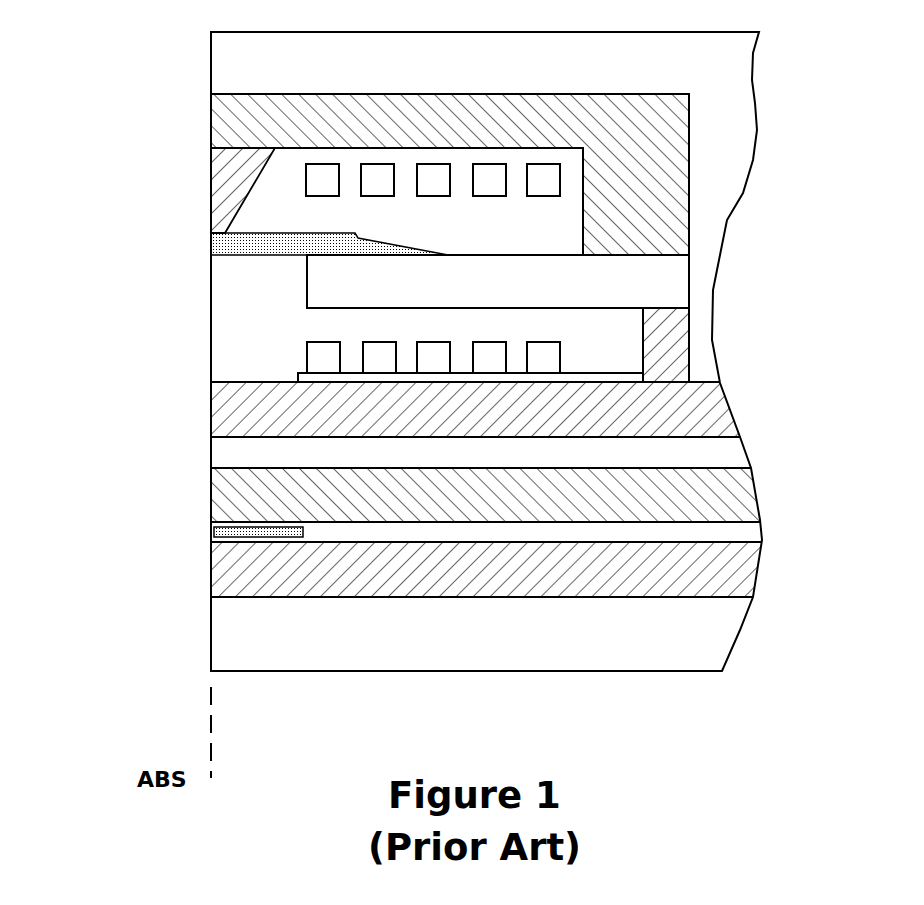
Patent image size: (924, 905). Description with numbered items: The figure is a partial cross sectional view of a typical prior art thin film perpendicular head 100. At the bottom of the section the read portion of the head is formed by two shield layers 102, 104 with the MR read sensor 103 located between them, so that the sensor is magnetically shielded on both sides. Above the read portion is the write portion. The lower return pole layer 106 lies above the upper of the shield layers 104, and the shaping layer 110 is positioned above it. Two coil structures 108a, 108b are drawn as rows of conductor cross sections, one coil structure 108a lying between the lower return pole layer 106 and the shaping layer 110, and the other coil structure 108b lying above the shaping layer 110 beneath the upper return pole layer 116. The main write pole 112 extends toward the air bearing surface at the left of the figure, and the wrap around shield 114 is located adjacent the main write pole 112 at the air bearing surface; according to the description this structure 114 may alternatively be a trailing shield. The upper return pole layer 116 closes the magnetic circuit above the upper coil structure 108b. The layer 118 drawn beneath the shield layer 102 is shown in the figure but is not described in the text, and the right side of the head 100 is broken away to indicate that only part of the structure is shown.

The thin film perpendicular head 100 is at (760, 233).
The shield layer 102 is at (402, 581).
The MR read sensor 103 is at (212, 532).
The shield layer 104 is at (402, 513).
The lower return pole layer 106 is at (388, 420).
The coil structure 108a is at (307, 343).
The coil structure 108b is at (433, 197).
The shaping layer 110 is at (548, 286).
The main write pole 112 is at (210, 245).
The wrap around shield 114 is at (218, 192).
The upper return pole layer 116 is at (462, 130).
The substrate 118 is at (450, 648).